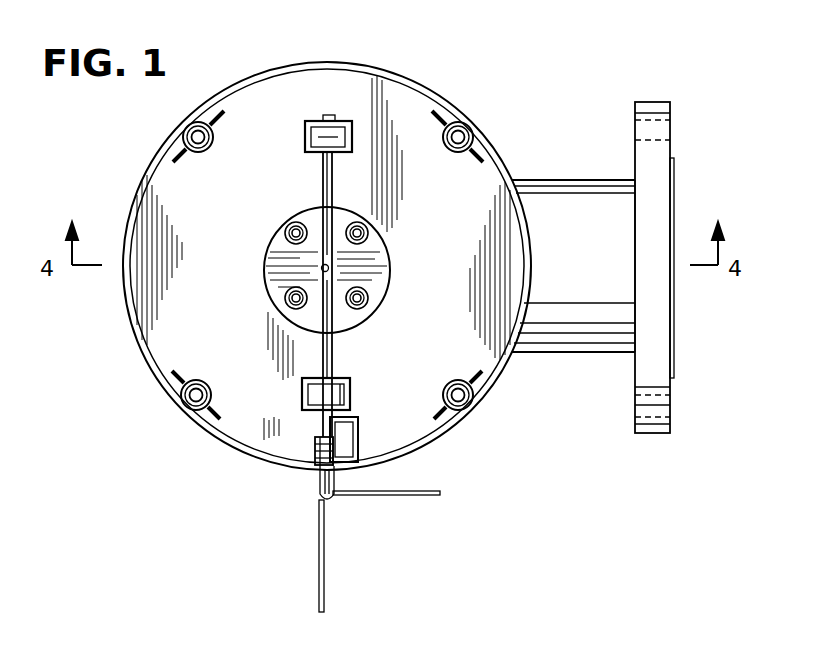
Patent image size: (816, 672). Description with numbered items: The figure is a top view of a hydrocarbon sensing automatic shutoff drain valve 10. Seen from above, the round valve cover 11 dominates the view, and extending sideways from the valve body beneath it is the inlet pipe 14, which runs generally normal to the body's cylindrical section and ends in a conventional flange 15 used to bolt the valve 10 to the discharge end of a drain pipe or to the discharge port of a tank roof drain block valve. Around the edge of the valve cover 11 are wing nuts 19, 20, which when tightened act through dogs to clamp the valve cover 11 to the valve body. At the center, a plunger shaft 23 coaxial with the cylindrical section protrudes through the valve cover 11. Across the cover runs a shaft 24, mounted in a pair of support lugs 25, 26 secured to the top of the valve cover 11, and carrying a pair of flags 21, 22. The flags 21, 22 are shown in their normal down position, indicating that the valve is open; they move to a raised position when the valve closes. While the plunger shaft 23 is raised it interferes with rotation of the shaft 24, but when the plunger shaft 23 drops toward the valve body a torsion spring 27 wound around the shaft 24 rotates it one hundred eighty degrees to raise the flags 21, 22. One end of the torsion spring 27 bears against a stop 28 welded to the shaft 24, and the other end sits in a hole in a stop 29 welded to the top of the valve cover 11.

The hydrocarbon sensing automatic shutoff drain valve 10 is at (447, 74).
The valve cover 11 is at (495, 180).
The inlet pipe 14 is at (540, 345).
The flange 15 is at (660, 101).
The wing nut 19 is at (182, 405).
The wing nut 20 is at (488, 404).
The flag 21 is at (323, 576).
The flag 22 is at (392, 495).
The plunger shaft 23 is at (323, 268).
The shaft 24 is at (333, 342).
The support lug 25 is at (305, 139).
The support lug 26 is at (352, 389).
The torsion spring 27 is at (316, 450).
The stop 28 is at (318, 463).
The stop 29 is at (360, 436).